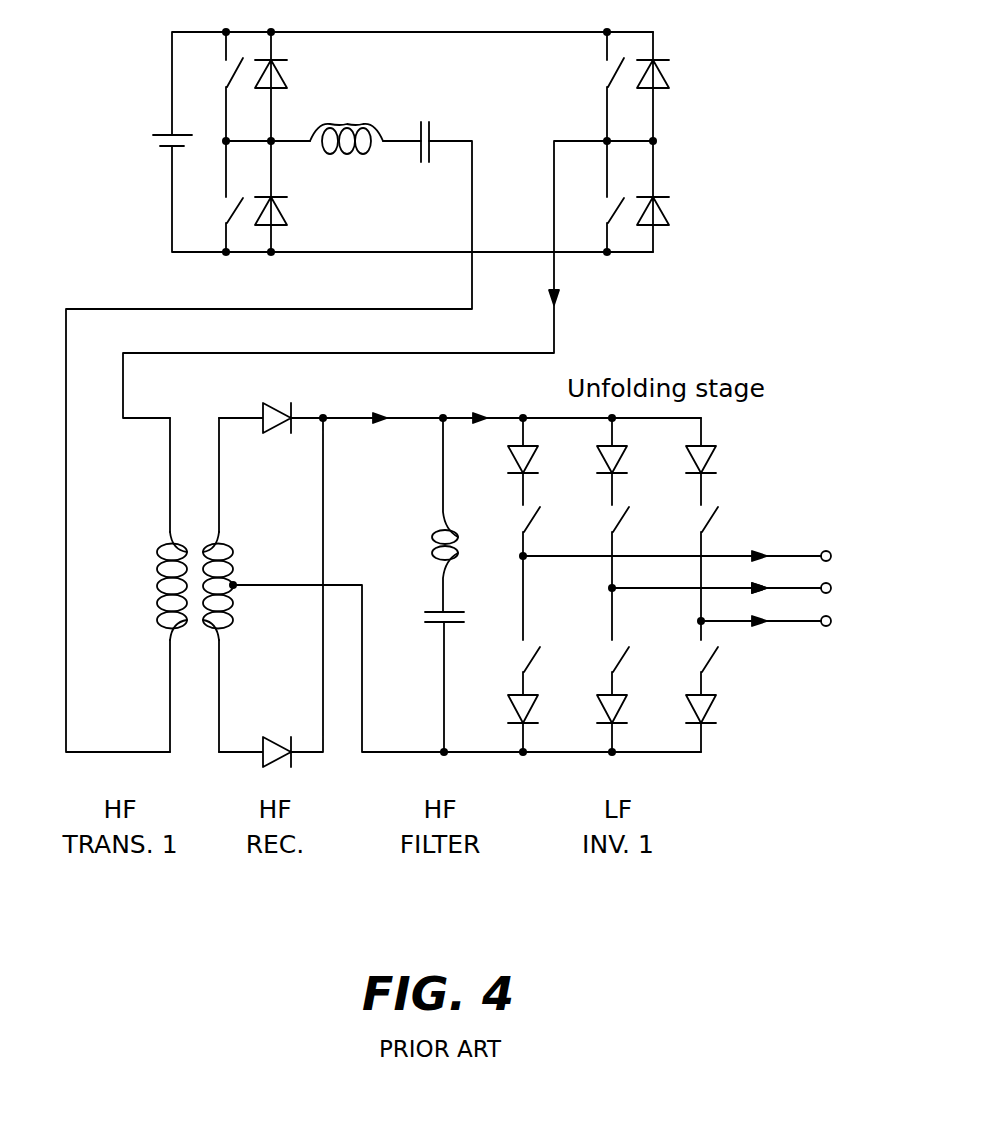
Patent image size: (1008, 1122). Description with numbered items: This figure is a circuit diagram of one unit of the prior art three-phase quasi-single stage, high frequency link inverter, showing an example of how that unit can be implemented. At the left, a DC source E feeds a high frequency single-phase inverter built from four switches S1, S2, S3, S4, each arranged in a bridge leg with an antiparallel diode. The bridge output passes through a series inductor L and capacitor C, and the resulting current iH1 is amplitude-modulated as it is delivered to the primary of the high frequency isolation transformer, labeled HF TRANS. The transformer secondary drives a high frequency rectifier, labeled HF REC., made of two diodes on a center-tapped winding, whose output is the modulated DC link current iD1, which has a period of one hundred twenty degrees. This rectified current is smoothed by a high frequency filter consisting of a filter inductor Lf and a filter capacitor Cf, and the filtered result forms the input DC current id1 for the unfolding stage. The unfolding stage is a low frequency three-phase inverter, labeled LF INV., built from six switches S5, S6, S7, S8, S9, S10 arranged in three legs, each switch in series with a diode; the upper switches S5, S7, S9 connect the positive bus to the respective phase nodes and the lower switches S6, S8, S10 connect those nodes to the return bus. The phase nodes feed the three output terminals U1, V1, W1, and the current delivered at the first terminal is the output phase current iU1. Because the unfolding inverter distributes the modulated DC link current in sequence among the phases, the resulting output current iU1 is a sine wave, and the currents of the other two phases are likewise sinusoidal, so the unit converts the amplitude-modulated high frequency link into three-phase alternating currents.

The DC voltage source E is at (153, 143).
The high frequency inverter switch S1 is at (215, 86).
The high frequency inverter switch S2 is at (215, 196).
The high frequency inverter switch S3 is at (596, 86).
The high frequency inverter switch S4 is at (596, 196).
The inductor L is at (346, 117).
The capacitor C is at (423, 121).
The high frequency inverter current iH1 is at (588, 309).
The modulated DC link current iD1 is at (383, 397).
The input DC current id1 is at (478, 397).
The filter inductor Lf is at (424, 515).
The filter capacitor Cf is at (426, 682).
The unfolding inverter switch S5 is at (513, 529).
The unfolding inverter switch S6 is at (513, 625).
The unfolding inverter switch S7 is at (602, 545).
The unfolding inverter switch S8 is at (602, 641).
The unfolding inverter switch S9 is at (690, 562).
The unfolding inverter switch S10 is at (685, 658).
The output phase current iU1 is at (763, 523).
The output terminal U1 is at (699, 558).
The output terminal V1 is at (743, 591).
The output terminal W1 is at (790, 624).